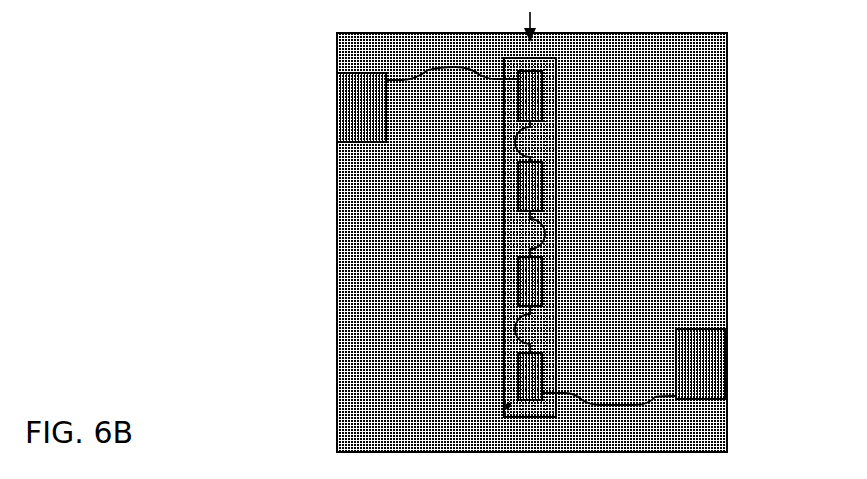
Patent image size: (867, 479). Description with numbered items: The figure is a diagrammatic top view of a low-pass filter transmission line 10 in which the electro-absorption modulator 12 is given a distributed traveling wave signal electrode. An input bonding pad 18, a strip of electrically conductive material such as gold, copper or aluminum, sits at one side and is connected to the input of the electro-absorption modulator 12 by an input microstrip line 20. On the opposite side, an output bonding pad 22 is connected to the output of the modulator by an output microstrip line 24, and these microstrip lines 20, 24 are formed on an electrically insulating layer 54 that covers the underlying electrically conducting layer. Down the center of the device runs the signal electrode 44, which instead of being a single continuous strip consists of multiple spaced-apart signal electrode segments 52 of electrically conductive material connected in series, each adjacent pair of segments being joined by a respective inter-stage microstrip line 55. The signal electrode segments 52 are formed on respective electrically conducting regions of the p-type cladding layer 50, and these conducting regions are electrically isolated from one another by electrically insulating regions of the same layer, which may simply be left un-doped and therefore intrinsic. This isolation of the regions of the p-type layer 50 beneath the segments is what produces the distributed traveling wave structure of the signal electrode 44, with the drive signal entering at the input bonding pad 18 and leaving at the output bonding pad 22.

The low-pass filter transmission line 10 is at (200, 235).
The electro-absorption modulator 12 is at (544, 24).
The input bonding pad 18 is at (337, 108).
The input microstrip line 20 is at (468, 70).
The output bonding pad 22 is at (727, 362).
The output microstrip line 24 is at (580, 402).
The signal electrode 44 is at (508, 405).
The p-type cladding semiconductor layer 50 is at (505, 297).
The signal electrode segments 52 is at (542, 85).
The electrically insulating layer 54 is at (338, 353).
The inter-stage microstrip line 55 is at (544, 233).